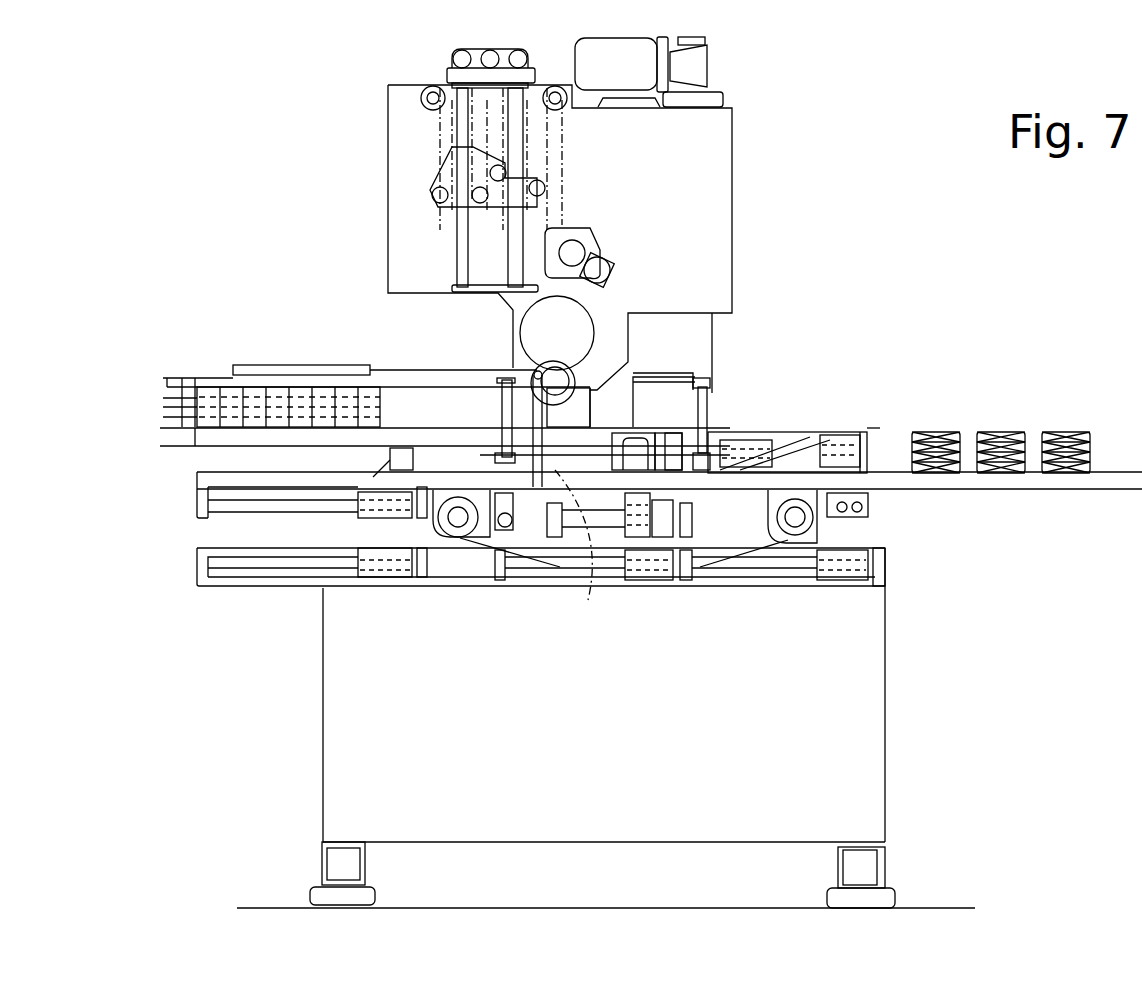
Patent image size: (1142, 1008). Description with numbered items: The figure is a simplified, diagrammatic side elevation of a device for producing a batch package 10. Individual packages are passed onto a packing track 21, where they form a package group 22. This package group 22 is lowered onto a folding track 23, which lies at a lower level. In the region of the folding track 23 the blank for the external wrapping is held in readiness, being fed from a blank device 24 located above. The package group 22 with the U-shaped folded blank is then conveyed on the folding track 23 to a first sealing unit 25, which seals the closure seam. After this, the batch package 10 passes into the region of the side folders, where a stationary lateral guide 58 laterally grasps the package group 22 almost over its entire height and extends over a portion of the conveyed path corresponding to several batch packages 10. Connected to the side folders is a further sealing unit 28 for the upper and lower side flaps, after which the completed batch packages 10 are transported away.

The batch package 10 is at (1058, 430).
The packing track 21 is at (158, 428).
The package group 22 is at (270, 388).
The folding track 23 is at (890, 473).
The blank device 24 is at (742, 207).
The first sealing unit 25 is at (648, 508).
The further sealing unit 28 is at (870, 430).
The lateral guide 58 is at (733, 437).